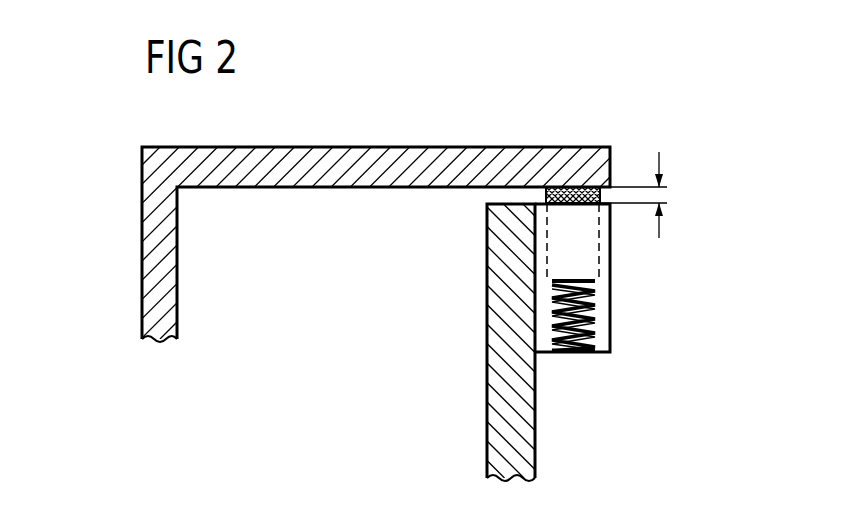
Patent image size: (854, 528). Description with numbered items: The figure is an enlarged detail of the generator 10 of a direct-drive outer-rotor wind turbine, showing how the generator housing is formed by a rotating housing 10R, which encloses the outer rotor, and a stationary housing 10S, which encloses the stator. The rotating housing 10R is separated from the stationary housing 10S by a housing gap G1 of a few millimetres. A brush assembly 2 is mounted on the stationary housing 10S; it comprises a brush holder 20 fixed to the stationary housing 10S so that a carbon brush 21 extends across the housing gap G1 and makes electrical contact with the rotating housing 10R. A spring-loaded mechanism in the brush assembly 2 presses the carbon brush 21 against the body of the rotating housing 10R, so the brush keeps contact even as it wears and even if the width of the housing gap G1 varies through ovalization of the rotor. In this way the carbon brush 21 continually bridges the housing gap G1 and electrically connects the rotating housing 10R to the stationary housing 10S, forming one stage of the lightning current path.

The brush assembly 2 is at (652, 277).
The generator 10 is at (340, 280).
The rotating housing 10R is at (342, 157).
The stationary housing 10S is at (525, 407).
The brush holder 20 is at (610, 328).
The carbon brush 21 is at (568, 187).
The housing gap G1 is at (662, 195).